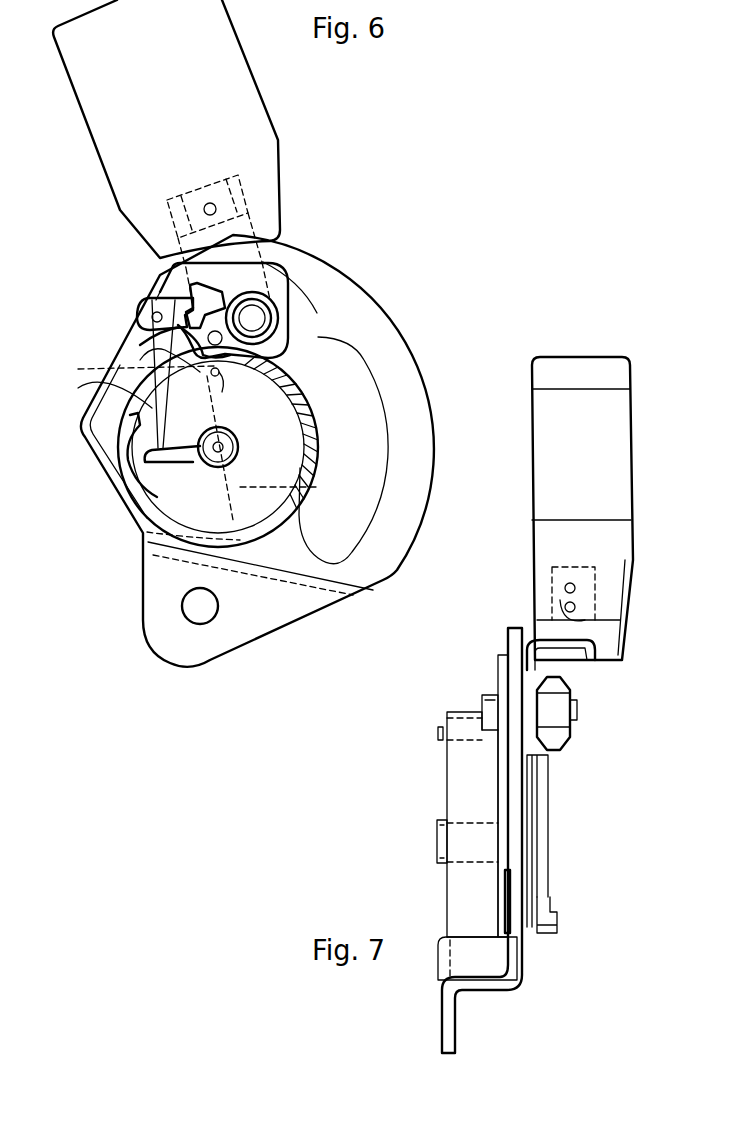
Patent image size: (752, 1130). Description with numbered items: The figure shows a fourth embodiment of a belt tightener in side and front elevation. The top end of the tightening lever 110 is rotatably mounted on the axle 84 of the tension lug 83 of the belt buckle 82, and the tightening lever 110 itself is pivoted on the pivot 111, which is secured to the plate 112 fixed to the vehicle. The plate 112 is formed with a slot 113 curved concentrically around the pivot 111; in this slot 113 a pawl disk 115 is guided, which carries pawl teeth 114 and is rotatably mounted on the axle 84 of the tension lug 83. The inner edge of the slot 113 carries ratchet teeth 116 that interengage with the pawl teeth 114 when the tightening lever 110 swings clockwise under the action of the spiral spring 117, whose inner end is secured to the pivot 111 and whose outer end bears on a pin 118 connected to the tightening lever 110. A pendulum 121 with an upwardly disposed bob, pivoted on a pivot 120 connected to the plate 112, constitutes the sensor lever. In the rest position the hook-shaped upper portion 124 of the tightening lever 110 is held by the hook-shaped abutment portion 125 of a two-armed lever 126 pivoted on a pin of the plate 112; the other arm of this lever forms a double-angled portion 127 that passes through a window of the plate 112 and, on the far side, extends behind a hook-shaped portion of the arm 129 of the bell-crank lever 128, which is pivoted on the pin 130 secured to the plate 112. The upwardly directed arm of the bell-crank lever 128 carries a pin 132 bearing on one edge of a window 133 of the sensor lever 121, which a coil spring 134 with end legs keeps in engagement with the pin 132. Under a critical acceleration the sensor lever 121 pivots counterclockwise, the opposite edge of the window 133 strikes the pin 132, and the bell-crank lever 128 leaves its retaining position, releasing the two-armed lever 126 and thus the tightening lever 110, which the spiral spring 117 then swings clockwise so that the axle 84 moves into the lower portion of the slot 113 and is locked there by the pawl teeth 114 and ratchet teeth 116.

In FIG. 6, the belt buckle 82 is at (254, 107).
In FIG. 6, the tension lug 83 is at (280, 256).
In FIG. 6, the axle 84 is at (262, 294).
In FIG. 6, the tightening lever 110 is at (270, 380).
In FIG. 7, the tightening lever 110 is at (500, 663).
In FIG. 7, the pivot 111 is at (437, 838).
In FIG. 6, the plate 112 is at (373, 320).
In FIG. 7, the plate 112 is at (525, 963).
In FIG. 6, the slot 113 is at (320, 338).
In FIG. 6, the pawl teeth 114 is at (150, 343).
In FIG. 6, the pawl disk 115 is at (300, 312).
In FIG. 6, the ratchet teeth 116 is at (303, 398).
In FIG. 6, the spiral spring 117 is at (303, 493).
In FIG. 7, the spiral spring 117 is at (455, 885).
In FIG. 7, the pin 118 is at (460, 723).
In FIG. 7, the pivot 120 is at (540, 930).
In FIG. 6, the pendulum 121 is at (303, 490).
In FIG. 7, the pendulum 121 is at (543, 798).
In FIG. 6, the hook-shaped upper portion 124 is at (173, 280).
In FIG. 6, the hook-shaped abutment portion 125 is at (178, 295).
In FIG. 6, the two-armed lever 126 is at (143, 347).
In FIG. 6, the double-angled portion 127 is at (150, 315).
In FIG. 6, the bell-crank lever 128 is at (238, 447).
In FIG. 6, the arm 129 is at (140, 470).
In FIG. 6, the pin 130 is at (240, 455).
In FIG. 6, the pin 132 is at (78, 369).
In FIG. 6, the window 133 is at (245, 432).
In FIG. 6, the coil spring 134 is at (147, 532).